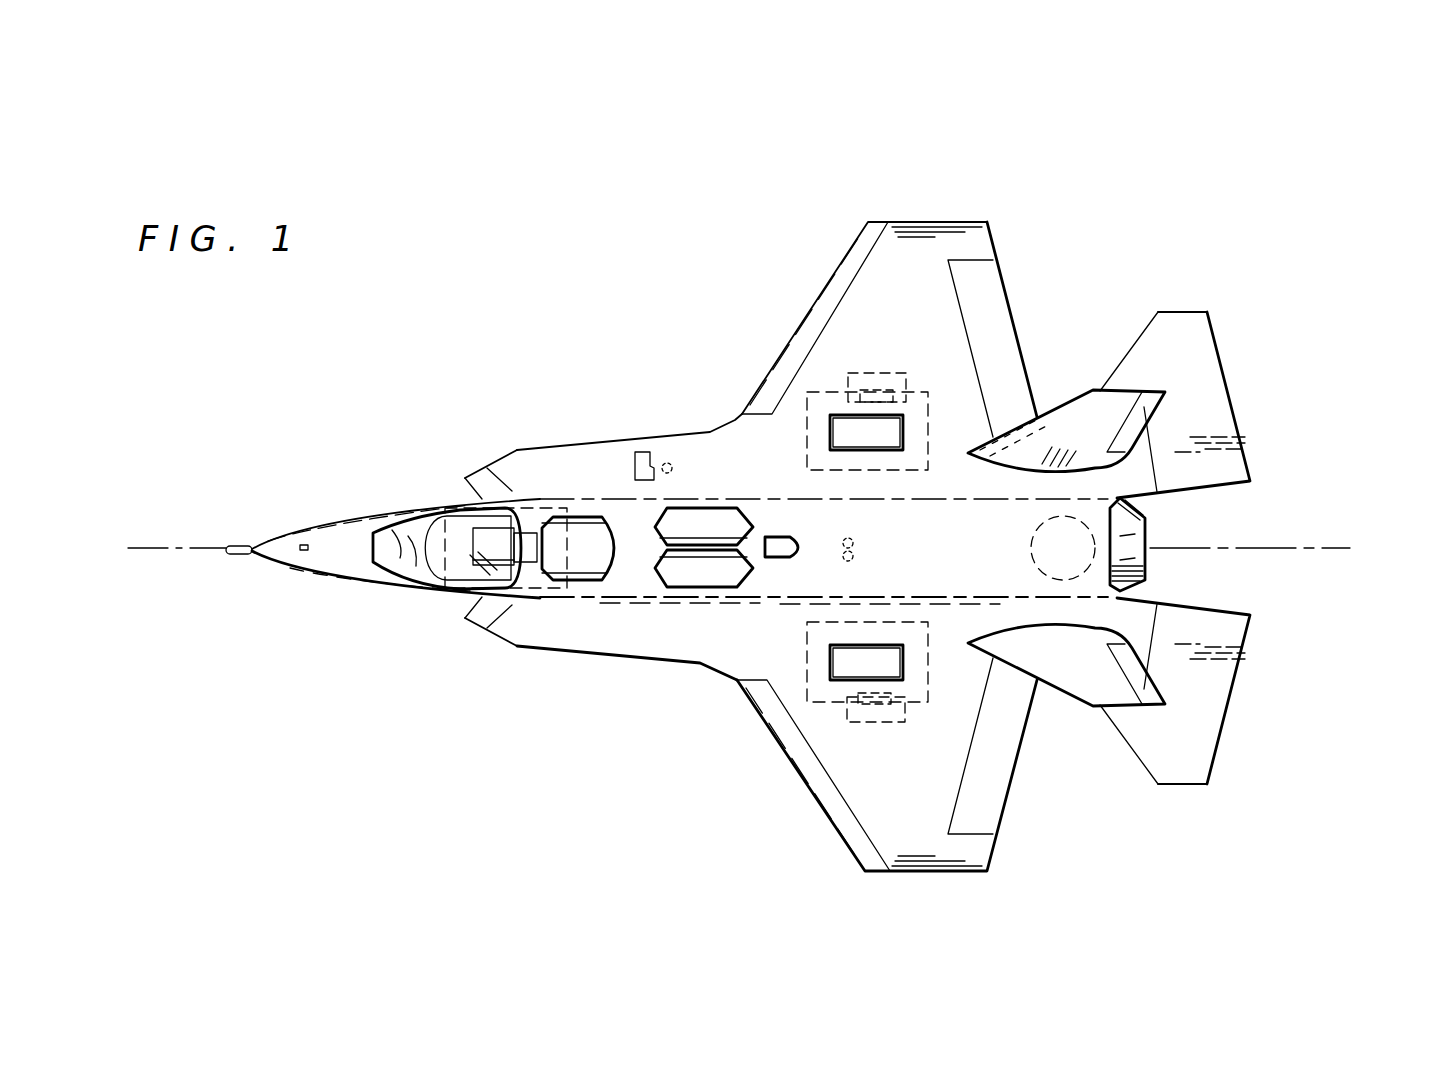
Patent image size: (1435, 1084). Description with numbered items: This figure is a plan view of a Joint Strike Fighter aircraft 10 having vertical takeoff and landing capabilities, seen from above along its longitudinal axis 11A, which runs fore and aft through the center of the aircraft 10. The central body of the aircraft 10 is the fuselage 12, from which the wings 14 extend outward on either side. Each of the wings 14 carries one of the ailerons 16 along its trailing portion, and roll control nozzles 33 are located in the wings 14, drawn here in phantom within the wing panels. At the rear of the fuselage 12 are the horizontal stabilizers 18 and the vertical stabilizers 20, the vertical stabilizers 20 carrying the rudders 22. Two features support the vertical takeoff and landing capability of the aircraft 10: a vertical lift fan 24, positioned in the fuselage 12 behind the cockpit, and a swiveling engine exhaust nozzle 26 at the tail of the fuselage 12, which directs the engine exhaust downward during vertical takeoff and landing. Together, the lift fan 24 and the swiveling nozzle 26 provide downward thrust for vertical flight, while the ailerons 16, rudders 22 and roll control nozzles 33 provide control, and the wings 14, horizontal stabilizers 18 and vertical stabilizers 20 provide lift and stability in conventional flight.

The aircraft 10 is at (1312, 277).
The longitudinal axis 11A is at (150, 546).
The fuselage 12 is at (352, 502).
The wings 14 is at (838, 267).
The ailerons 16 is at (1005, 290).
The horizontal stabilizers 18 is at (1220, 342).
The vertical stabilizers 20 is at (1058, 405).
The rudders 22 is at (1158, 416).
The vertical lift fan 24 is at (582, 490).
The swiveling engine exhaust nozzle 26 is at (1148, 532).
The roll control nozzles 33 is at (828, 378).